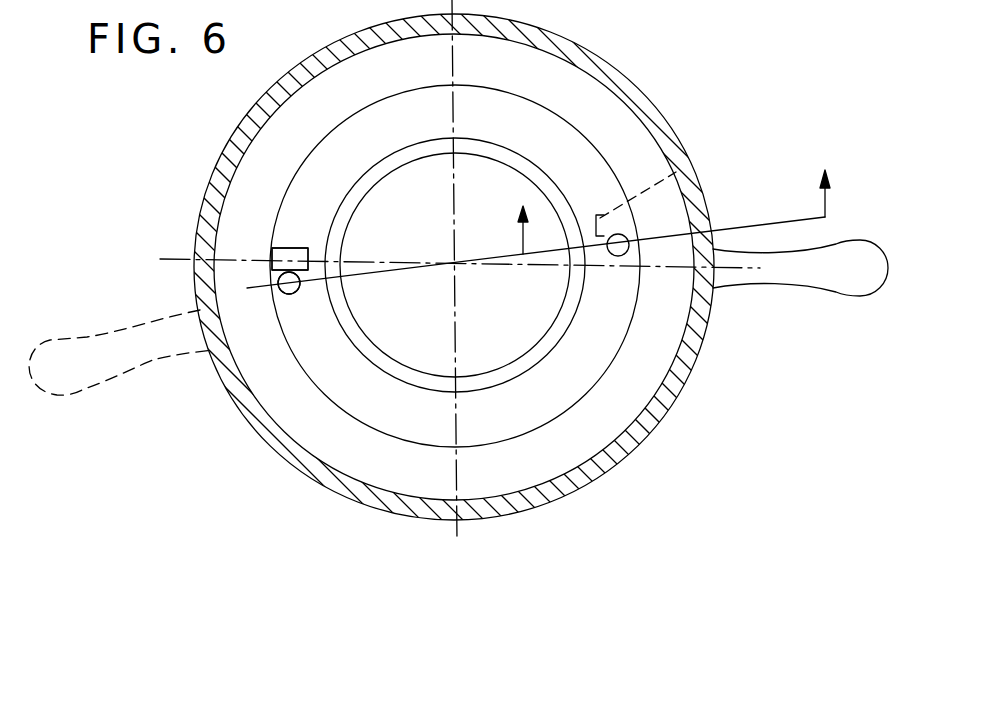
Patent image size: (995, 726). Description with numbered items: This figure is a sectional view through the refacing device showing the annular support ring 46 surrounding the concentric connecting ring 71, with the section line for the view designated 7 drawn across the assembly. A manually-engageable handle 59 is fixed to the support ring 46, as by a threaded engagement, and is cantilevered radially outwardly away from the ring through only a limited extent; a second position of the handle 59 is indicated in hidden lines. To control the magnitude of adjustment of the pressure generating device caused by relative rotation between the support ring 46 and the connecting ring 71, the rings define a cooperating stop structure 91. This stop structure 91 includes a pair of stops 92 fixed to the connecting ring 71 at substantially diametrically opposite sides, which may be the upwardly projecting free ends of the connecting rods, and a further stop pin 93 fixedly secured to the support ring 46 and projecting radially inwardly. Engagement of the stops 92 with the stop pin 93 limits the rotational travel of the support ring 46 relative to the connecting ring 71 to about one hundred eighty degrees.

The annular support ring 46 is at (635, 398).
The connecting ring 71 is at (553, 402).
The handle 59 is at (68, 355).
The section line 7- 7 is at (553, 224).
The stop structure 91 is at (245, 236).
The stop pin 93 is at (272, 268).
The stops 92 is at (297, 292).